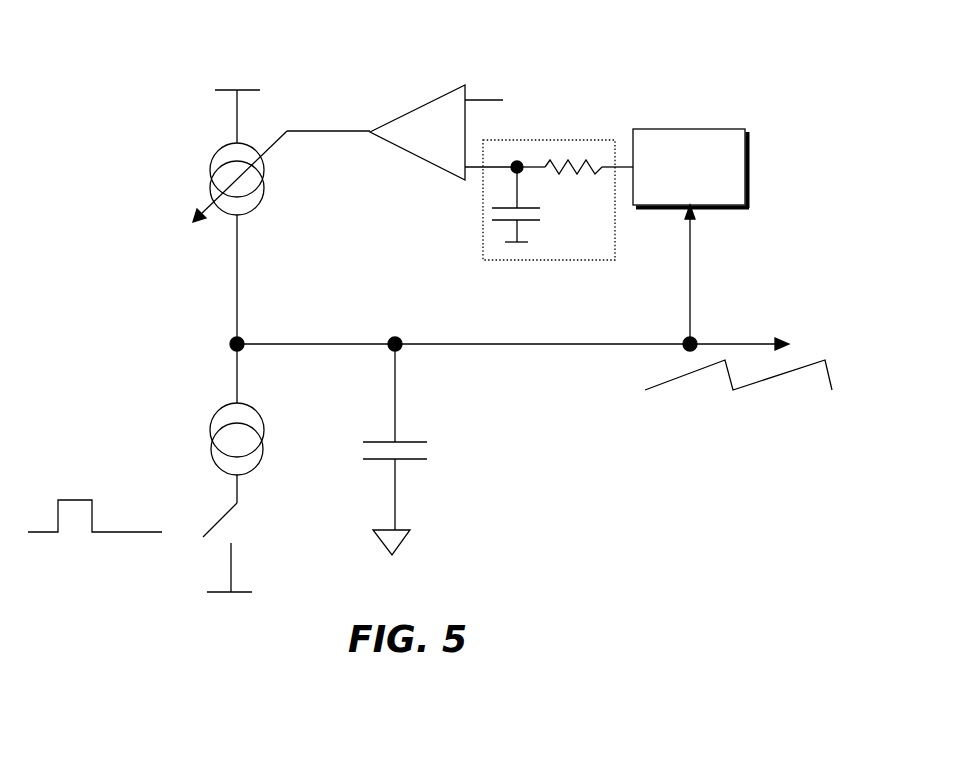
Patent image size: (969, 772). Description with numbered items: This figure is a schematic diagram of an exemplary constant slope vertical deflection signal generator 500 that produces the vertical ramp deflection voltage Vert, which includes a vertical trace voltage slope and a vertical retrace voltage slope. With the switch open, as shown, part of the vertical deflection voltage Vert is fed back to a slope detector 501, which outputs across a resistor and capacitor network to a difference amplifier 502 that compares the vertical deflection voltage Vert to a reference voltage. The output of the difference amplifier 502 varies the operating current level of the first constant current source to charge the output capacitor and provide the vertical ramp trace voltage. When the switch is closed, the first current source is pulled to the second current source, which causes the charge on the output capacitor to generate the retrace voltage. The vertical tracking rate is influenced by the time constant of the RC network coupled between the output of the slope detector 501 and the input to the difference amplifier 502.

The slope detection circuit 500 is at (430, 309).
The slope detector 501 is at (693, 129).
The difference amplifier 502 is at (433, 98).